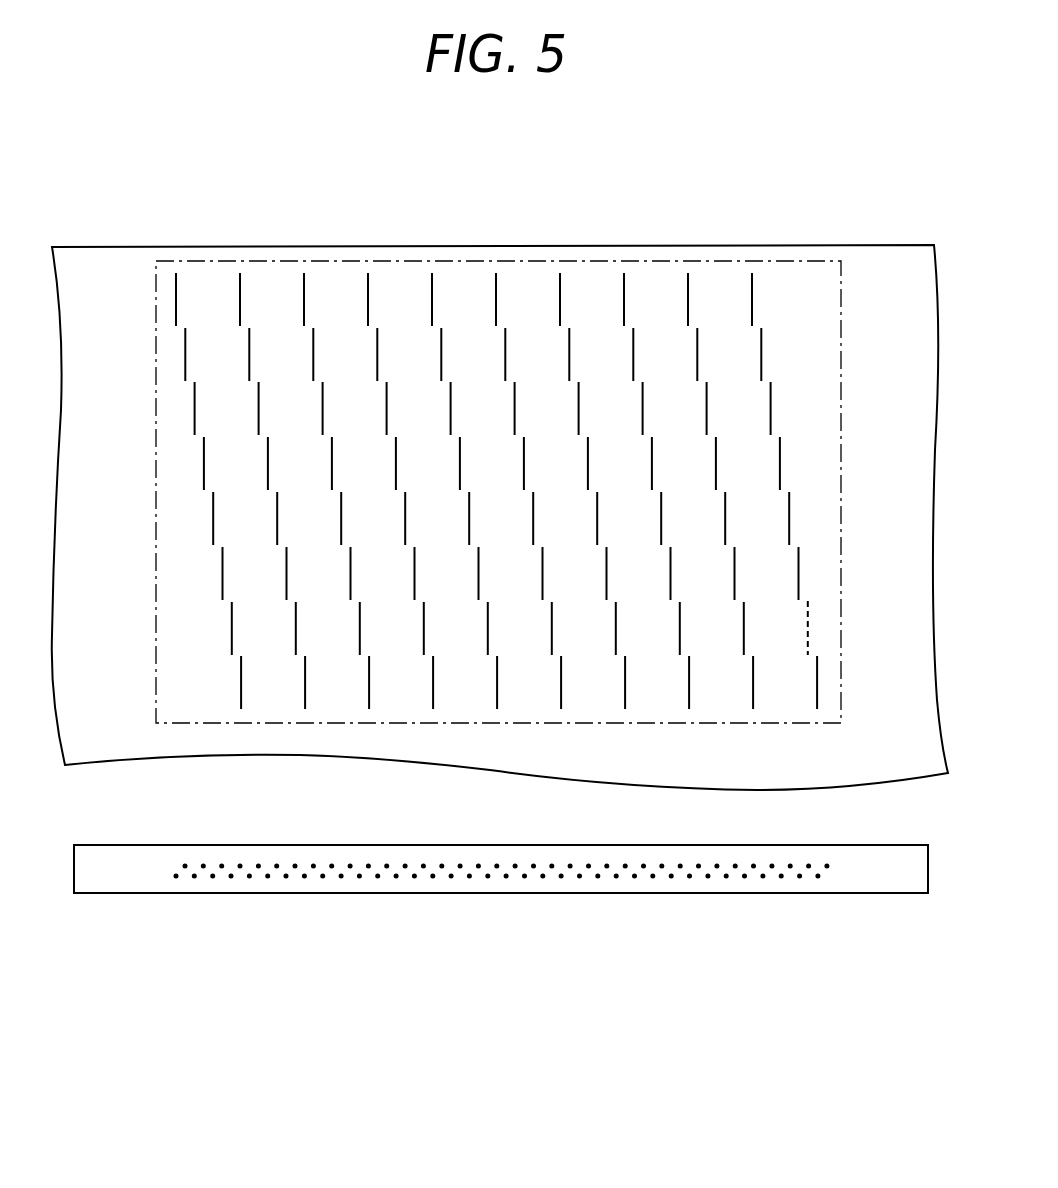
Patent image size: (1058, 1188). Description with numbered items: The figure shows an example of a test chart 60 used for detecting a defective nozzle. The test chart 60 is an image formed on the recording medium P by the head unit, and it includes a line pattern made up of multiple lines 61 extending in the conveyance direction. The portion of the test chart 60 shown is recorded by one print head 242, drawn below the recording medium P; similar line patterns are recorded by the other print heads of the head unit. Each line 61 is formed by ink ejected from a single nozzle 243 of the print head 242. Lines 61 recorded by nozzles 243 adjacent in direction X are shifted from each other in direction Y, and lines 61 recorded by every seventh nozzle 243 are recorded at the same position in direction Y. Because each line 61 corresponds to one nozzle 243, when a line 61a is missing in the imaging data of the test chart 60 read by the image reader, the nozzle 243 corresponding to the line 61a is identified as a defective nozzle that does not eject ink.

The recording medium P is at (695, 247).
The test chart 60 is at (492, 261).
The line 61 is at (305, 290).
The line 61a is at (809, 622).
The print head 242 is at (412, 893).
The nozzle 243 is at (517, 866).